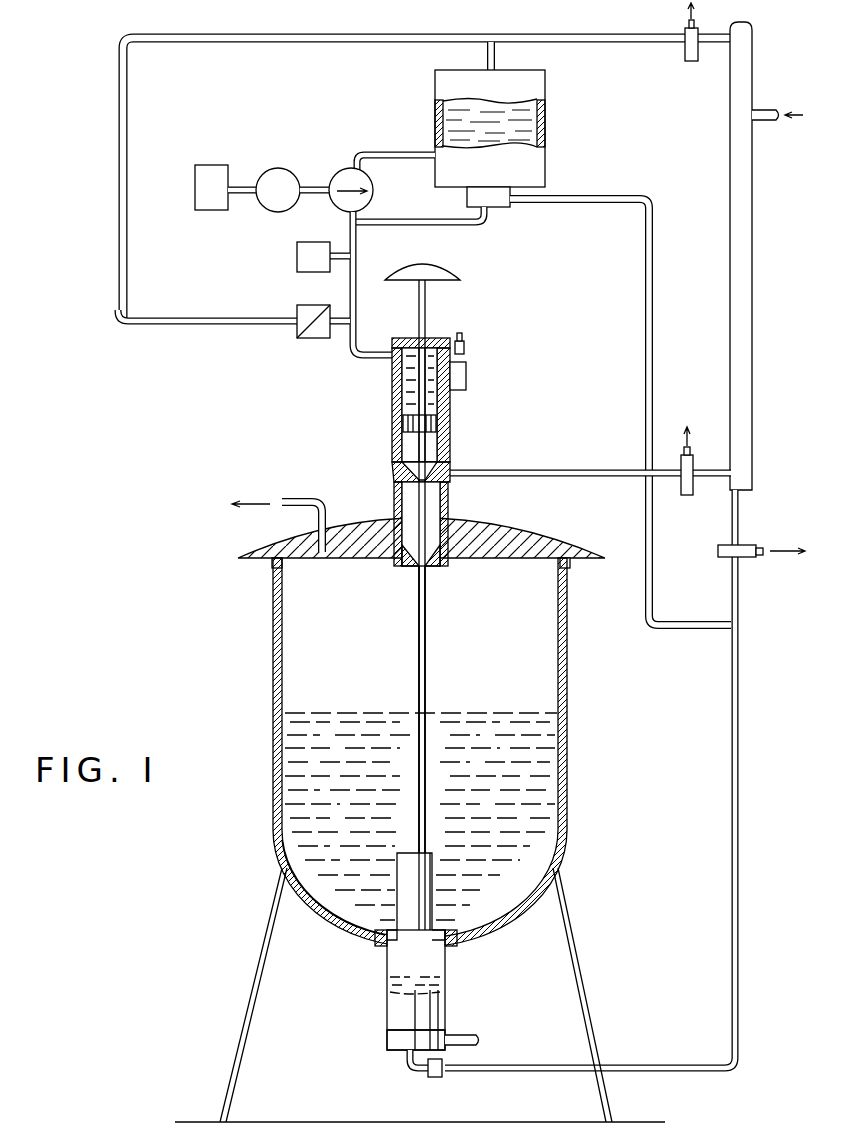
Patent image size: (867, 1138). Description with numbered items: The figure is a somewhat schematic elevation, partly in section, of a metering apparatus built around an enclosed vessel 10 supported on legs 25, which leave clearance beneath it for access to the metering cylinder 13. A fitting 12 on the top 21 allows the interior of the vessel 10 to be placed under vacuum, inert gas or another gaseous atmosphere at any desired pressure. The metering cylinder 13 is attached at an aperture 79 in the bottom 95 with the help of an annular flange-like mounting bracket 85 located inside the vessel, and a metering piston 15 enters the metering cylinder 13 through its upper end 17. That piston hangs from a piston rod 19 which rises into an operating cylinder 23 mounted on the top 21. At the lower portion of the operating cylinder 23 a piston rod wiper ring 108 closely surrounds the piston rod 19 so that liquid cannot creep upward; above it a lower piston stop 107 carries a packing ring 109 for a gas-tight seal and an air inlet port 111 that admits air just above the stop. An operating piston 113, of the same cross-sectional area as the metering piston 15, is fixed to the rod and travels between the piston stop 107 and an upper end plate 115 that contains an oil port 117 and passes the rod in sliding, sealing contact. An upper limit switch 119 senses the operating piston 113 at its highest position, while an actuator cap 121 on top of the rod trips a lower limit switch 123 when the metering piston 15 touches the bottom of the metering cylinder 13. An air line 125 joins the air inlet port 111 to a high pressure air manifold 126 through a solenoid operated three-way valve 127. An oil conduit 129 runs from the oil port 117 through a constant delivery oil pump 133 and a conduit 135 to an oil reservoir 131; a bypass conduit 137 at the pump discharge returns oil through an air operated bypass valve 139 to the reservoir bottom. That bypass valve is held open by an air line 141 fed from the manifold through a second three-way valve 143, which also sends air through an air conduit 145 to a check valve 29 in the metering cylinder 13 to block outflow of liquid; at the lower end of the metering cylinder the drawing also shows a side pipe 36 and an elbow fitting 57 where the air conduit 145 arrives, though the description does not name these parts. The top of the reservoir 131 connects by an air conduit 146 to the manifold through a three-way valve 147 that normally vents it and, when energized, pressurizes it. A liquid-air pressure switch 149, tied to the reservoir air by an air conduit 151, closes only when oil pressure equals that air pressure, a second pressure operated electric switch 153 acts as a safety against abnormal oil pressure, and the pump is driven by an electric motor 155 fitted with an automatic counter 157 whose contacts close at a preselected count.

The enclosed vessel 10 is at (273, 620).
The fitting 12 is at (297, 500).
The metering cylinder 13 is at (404, 991).
The metering piston 15 is at (432, 872).
The upper end 17 is at (440, 928).
The piston rod 19 is at (425, 652).
The top 21 is at (576, 548).
The operating cylinder 23 is at (412, 616).
The legs 25 is at (250, 996).
The check valve 29 is at (395, 1052).
The pipe 36 is at (458, 1040).
The elbow fitting 57 is at (420, 1072).
The aperture 79 is at (387, 960).
The mounting bracket 85 is at (450, 938).
The bottom 95 is at (340, 938).
The lower piston stop 107 is at (398, 470).
The piston rod wiper ring 108 is at (430, 567).
The packing ring 109 is at (448, 486).
The air inlet port 111 is at (448, 468).
The operating piston 113 is at (403, 422).
The upper end plate 115 is at (438, 346).
The oil port 117 is at (400, 346).
The upper limit switch 119 is at (466, 380).
The actuator cap 121 is at (440, 270).
The lower limit switch 123 is at (465, 346).
The air line 125 is at (560, 472).
The high pressure air manifold 126 is at (752, 250).
The solenoid operated 3-way valve 127 is at (680, 508).
The oil conduit 129 is at (357, 358).
The oil reservoir 131 is at (548, 110).
The constant delivery oil pump 133 is at (347, 170).
The conduit 135 is at (393, 136).
The bypass conduit 137 is at (430, 222).
The air operated bypass valve 139 is at (505, 206).
The air line 141 is at (648, 334).
The solenoid operated 3-way valve 143 is at (752, 548).
The air conduit 145 is at (741, 925).
The air conduit 146 is at (523, 38).
The solenoid operated 3-way valve 147 is at (687, 32).
The liquid-air pressure switch 149 is at (297, 320).
The air conduit 151 is at (173, 320).
The second pressure operated electric switch 153 is at (298, 256).
The electric motor 155 is at (278, 168).
The automatic counter 157 is at (213, 172).